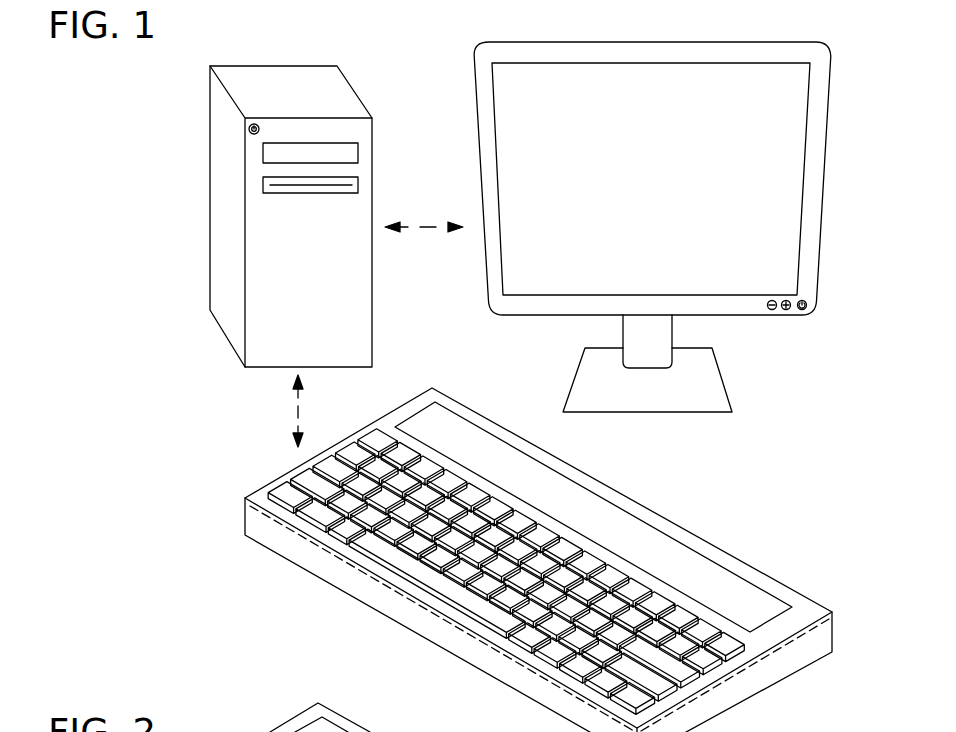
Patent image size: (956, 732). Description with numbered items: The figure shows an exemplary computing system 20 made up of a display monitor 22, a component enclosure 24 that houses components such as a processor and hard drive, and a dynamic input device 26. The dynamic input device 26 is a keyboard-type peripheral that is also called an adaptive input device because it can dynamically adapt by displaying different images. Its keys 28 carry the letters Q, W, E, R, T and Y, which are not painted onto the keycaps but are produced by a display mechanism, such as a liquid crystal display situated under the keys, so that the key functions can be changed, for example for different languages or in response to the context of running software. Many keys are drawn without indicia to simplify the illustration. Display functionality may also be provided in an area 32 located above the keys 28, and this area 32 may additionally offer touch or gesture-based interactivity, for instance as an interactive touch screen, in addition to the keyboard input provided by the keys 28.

The computing system 20 is at (157, 445).
The display monitor 22 is at (777, 42).
The component enclosure 24 is at (278, 66).
The dynamic input device 26 is at (591, 473).
The keys 28 is at (369, 498).
The area 32 is at (618, 530).